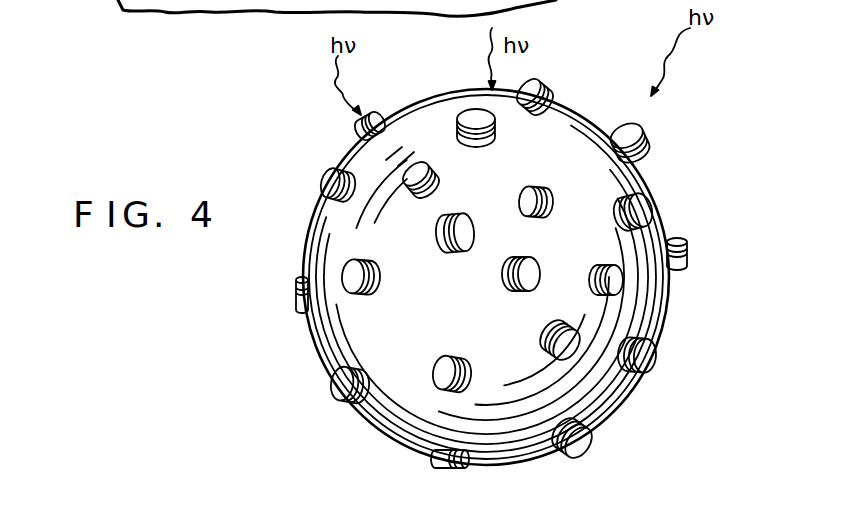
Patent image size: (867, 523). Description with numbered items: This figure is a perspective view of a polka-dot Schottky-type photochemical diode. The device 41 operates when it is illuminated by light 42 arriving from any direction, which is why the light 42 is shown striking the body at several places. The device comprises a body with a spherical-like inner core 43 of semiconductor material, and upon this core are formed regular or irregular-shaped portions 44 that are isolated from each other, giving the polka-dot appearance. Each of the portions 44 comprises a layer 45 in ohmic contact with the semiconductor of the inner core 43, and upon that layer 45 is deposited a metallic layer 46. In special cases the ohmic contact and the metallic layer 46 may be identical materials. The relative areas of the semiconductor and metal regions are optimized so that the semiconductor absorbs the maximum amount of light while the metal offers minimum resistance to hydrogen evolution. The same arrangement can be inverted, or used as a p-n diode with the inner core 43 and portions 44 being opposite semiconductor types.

The device 41 is at (313, 176).
The light 42 is at (334, 90).
The inner core 43 is at (463, 305).
The portions 44 is at (553, 94).
The layer 45 is at (411, 197).
The metallic layer 46 is at (416, 166).